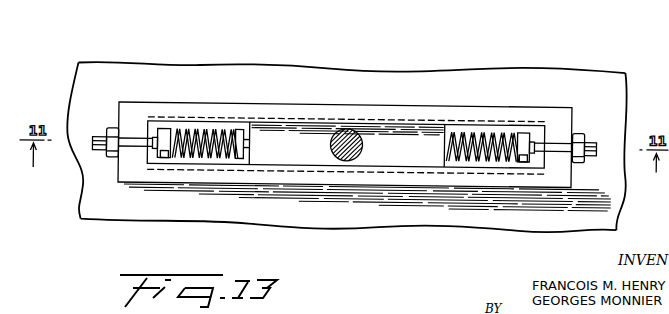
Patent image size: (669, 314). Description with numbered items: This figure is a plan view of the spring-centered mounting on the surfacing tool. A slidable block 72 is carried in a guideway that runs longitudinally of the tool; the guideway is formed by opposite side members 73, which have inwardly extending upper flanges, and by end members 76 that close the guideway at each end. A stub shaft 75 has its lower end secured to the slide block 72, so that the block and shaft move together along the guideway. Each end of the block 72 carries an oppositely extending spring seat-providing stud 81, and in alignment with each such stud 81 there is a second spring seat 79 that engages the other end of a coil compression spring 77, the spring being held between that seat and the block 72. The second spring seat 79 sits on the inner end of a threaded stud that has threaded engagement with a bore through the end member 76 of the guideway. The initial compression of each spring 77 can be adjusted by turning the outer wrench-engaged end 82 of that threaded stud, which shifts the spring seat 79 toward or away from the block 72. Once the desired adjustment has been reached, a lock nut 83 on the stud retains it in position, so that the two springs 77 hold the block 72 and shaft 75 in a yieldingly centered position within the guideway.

The slidable block 72 is at (290, 131).
The side members 73 is at (410, 108).
The stub shaft 75 is at (352, 127).
The end members 76 is at (128, 110).
The coil compression spring 77 is at (213, 156).
The second spring seat 79 is at (157, 158).
The spring seat-providing stud 81 is at (233, 129).
The wrench-engaged end 82 is at (97, 140).
The lock nut 83 is at (115, 145).